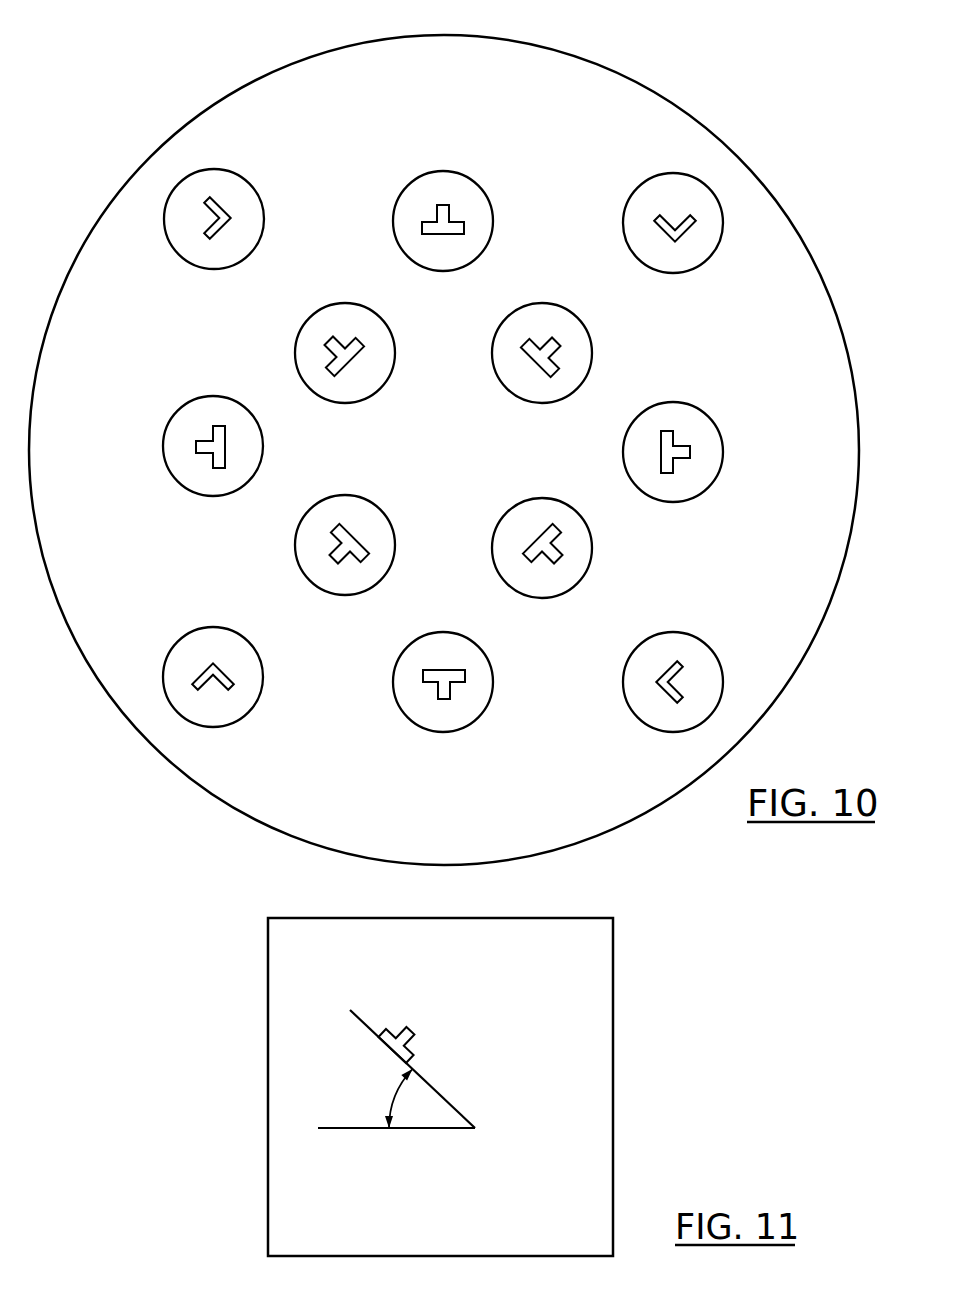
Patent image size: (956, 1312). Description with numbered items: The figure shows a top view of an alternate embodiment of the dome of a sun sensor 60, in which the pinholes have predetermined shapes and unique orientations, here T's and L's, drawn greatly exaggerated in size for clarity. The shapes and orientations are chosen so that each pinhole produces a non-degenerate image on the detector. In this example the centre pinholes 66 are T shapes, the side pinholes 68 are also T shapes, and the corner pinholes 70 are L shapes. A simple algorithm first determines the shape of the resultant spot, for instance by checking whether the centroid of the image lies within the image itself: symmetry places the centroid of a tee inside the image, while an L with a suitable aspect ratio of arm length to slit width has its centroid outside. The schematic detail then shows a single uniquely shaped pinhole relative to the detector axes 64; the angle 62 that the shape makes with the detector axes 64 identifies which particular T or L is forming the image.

In FIG. 10, the sun sensor 60 is at (692, 98).
In FIG. 11, the angle 62 is at (393, 1092).
In FIG. 11, the detector axes 64 is at (357, 1134).
In FIG. 10, the centre pinholes 66 is at (354, 370).
In FIG. 10, the side pinholes 68 is at (462, 210).
In FIG. 10, the corner pinholes 70 is at (663, 206).